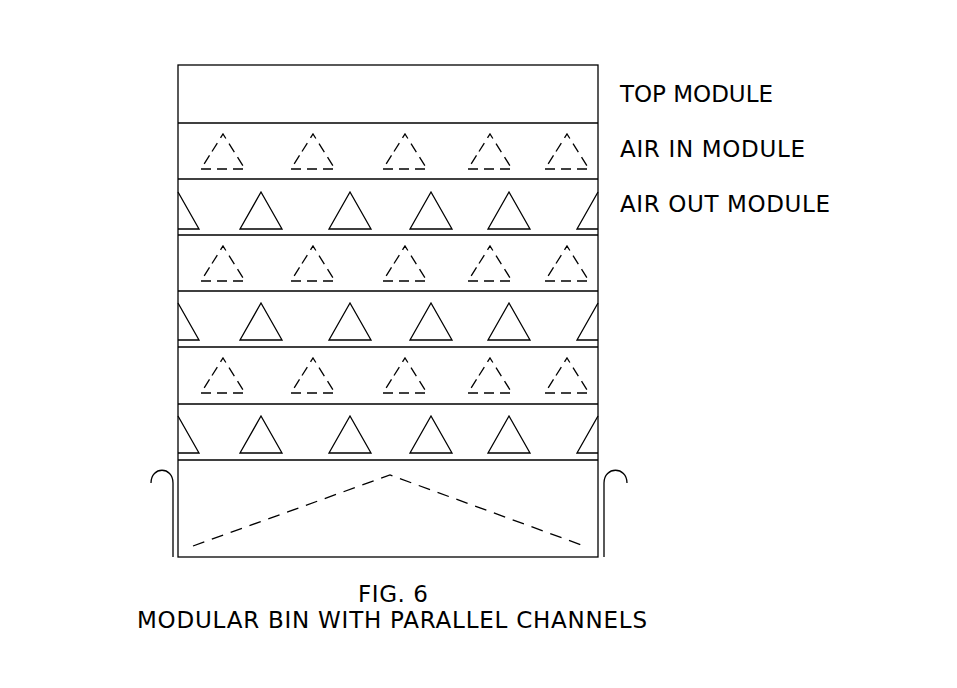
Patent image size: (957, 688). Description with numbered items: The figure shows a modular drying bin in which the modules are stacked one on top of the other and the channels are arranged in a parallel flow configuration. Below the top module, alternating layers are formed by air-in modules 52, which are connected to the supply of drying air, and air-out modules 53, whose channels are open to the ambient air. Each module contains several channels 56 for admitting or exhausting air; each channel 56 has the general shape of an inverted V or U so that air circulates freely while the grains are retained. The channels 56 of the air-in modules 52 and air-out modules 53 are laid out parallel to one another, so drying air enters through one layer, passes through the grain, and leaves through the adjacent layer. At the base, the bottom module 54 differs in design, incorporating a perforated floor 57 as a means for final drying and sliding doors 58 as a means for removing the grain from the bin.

The air-in module 52 is at (178, 155).
The air-out module 53 is at (178, 187).
The bottom module 54 is at (190, 503).
The channel 56 is at (325, 148).
The perforated floor 57 is at (515, 522).
The sliding door 58 is at (604, 519).